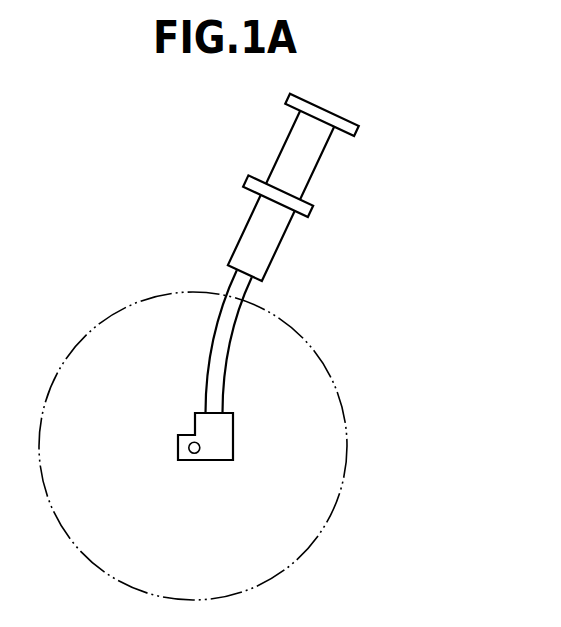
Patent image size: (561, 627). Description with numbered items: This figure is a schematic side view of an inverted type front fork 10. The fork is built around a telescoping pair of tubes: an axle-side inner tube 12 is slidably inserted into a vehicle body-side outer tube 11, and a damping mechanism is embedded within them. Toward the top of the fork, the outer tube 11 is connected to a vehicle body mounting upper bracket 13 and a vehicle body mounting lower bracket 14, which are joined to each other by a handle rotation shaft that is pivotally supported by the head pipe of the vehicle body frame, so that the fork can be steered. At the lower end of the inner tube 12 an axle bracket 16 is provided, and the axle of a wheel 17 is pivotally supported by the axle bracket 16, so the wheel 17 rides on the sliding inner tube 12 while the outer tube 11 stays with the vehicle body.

The inverted type front fork 10 is at (215, 160).
The vehicle body-side outer tube 11 is at (303, 163).
The axle-side inner tube 12 is at (218, 383).
The vehicle body mounting upper bracket 13 is at (353, 132).
The vehicle body mounting lower bracket 14 is at (317, 208).
The axle bracket 16 is at (223, 440).
The wheel 17 is at (348, 435).